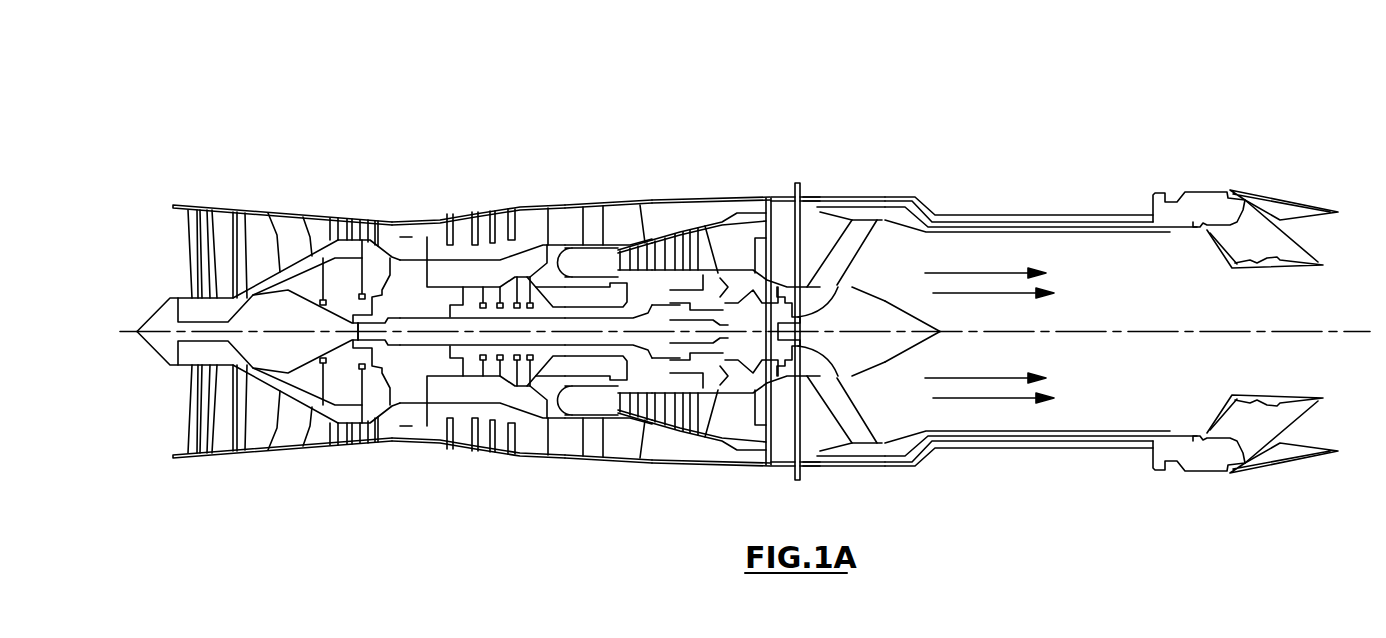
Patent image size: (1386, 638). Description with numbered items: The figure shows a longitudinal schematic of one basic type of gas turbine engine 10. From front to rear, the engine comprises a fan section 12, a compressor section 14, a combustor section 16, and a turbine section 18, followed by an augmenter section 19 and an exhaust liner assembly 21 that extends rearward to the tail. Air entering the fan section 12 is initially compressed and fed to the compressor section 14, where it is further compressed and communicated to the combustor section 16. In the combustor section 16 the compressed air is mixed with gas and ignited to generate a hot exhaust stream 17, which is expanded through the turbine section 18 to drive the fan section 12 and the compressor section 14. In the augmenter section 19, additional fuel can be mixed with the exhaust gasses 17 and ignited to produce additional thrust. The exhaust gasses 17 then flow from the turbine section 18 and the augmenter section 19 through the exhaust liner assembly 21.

The gas turbine engine 10 is at (745, 271).
The fan section 12 is at (392, 126).
The compressor section 14 is at (565, 126).
The combustor section 16 is at (652, 126).
The hot exhaust stream 17 is at (1000, 408).
The turbine section 18 is at (820, 126).
The augmenter section 19 is at (880, 126).
The exhaust liner assembly 21 is at (885, 126).